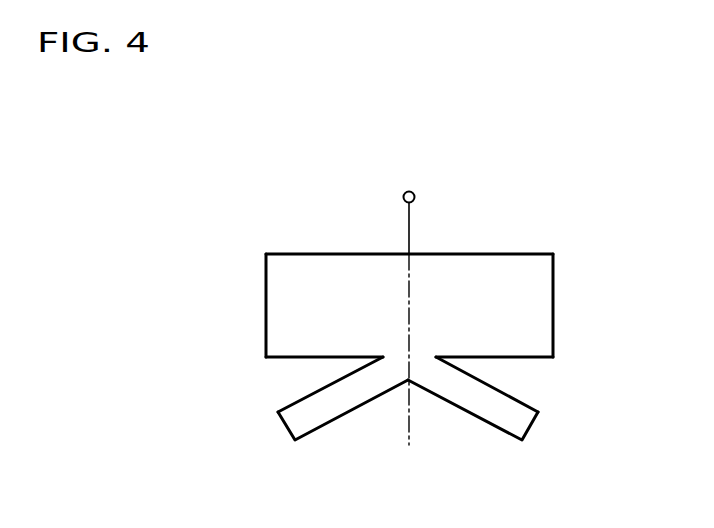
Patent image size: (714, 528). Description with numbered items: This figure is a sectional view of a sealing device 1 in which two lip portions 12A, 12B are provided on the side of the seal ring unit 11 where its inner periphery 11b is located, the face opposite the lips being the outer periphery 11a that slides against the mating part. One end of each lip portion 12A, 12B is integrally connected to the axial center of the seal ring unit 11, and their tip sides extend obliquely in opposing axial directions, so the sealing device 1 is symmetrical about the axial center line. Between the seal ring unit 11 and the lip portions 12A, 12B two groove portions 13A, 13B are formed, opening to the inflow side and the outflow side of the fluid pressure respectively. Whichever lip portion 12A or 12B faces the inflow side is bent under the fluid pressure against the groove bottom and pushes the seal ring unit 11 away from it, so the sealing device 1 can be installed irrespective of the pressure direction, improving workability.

The sealing device 1 is at (486, 234).
The seal ring unit 11 is at (537, 303).
The outer periphery 11a is at (345, 252).
The inner periphery 11b is at (283, 358).
The lip portion 12A is at (325, 420).
The lip portion 12B is at (505, 425).
The groove portion 13A is at (282, 390).
The groove portion 13B is at (537, 392).